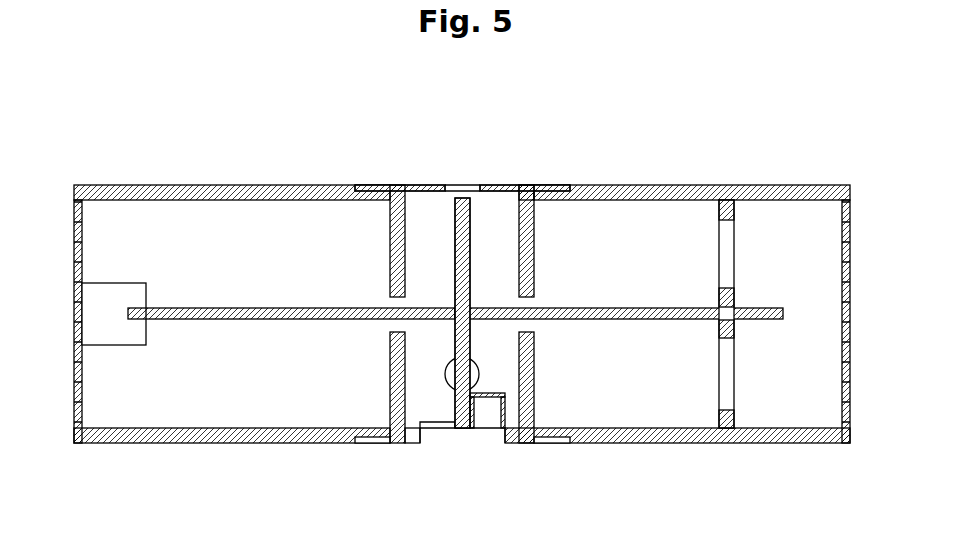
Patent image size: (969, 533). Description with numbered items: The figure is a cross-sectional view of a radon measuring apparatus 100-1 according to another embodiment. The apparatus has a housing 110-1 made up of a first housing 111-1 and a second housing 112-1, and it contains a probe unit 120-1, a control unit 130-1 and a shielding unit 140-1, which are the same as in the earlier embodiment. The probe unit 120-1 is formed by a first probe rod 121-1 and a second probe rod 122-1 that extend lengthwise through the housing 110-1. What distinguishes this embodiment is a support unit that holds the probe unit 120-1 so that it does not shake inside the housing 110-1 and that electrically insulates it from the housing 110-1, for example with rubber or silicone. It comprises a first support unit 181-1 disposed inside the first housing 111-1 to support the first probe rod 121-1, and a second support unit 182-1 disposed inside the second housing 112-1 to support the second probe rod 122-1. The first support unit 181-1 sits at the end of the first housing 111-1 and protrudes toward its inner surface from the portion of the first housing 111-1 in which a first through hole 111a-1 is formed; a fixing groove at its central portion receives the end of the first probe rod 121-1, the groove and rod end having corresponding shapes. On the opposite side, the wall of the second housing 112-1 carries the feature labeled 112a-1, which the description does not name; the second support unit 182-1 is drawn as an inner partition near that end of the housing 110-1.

The radon measuring apparatus 100-1 is at (726, 100).
The housing 110-1 is at (650, 124).
The first housing 111-1 is at (355, 185).
The second housing 112-1 is at (713, 185).
The first through hole 111a-1 is at (74, 242).
The second side wall 112a-1 is at (850, 248).
The probe unit 120-1 is at (313, 122).
The first probe rod 121-1 is at (300, 308).
The second probe rod 122-1 is at (593, 307).
The control unit 130-1 is at (458, 400).
The shielding unit 140-1 is at (535, 197).
The first support unit 181-1 is at (115, 340).
The second support unit 182-1 is at (741, 419).